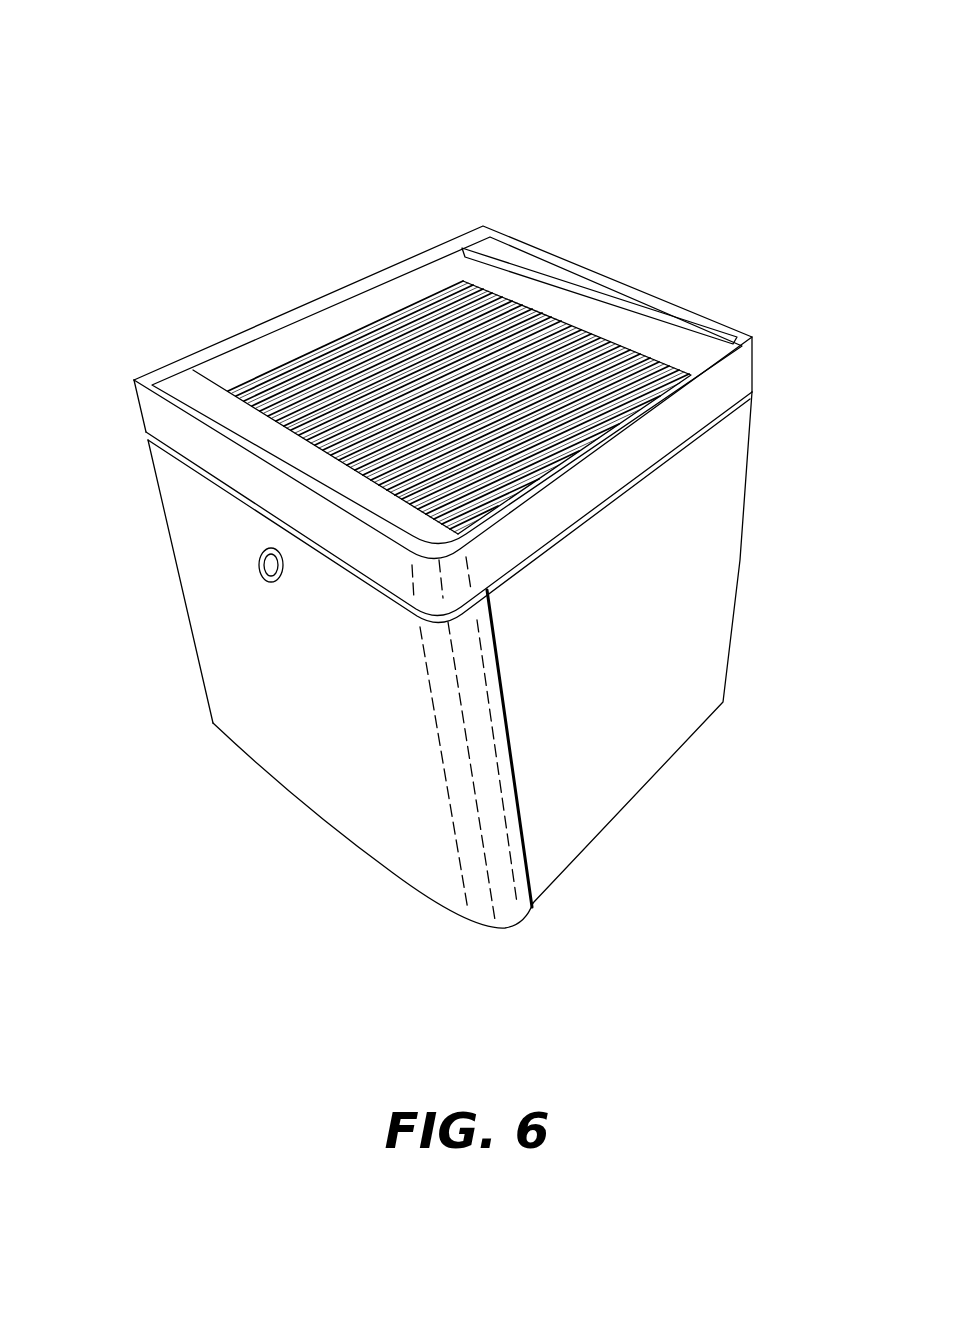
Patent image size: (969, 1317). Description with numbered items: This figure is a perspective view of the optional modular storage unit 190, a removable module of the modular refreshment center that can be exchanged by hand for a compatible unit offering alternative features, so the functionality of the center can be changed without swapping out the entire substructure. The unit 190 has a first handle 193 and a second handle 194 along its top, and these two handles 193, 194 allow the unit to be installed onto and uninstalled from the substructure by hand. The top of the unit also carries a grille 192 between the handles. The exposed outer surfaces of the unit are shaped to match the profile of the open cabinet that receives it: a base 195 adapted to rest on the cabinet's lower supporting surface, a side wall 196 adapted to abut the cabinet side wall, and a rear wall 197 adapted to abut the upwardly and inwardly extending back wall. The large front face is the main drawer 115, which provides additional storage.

The modular storage unit 190 is at (287, 109).
The outlet grille 192 is at (420, 306).
The first handle 193 is at (208, 416).
The second handle 194 is at (643, 318).
The base 195 is at (331, 884).
The side wall 196 is at (242, 290).
The rear wall 197 is at (759, 477).
The main drawer 115 is at (212, 610).